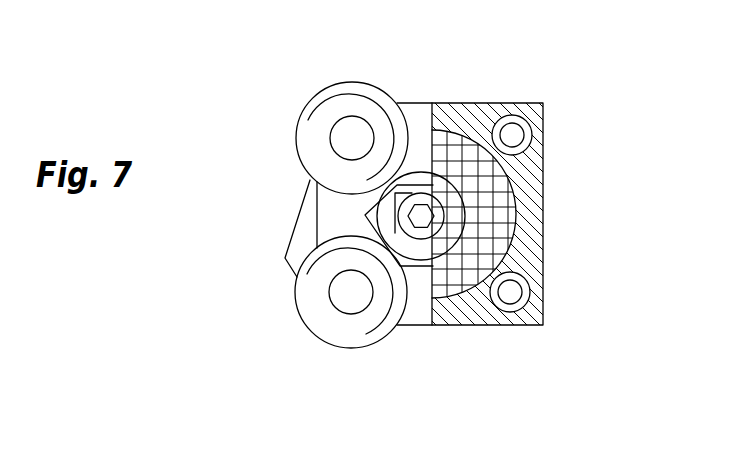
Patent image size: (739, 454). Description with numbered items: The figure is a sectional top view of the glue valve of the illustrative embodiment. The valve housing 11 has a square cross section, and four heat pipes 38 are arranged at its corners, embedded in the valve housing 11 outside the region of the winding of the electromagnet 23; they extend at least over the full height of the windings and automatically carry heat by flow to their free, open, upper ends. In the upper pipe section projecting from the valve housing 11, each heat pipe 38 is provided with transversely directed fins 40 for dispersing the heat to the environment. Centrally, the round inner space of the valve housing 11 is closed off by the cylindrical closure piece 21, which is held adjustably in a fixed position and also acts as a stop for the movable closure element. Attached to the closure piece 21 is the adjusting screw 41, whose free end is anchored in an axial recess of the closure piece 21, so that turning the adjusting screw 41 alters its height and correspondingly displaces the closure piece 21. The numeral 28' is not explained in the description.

The valve housing 11 is at (522, 90).
The closure piece 21 is at (502, 214).
The electromagnet 23 is at (432, 216).
The heat pipes 38 is at (376, 82).
The fins 40 is at (328, 122).
The adjusting screw 41 is at (431, 222).
The roller carrier 28' is at (335, 138).